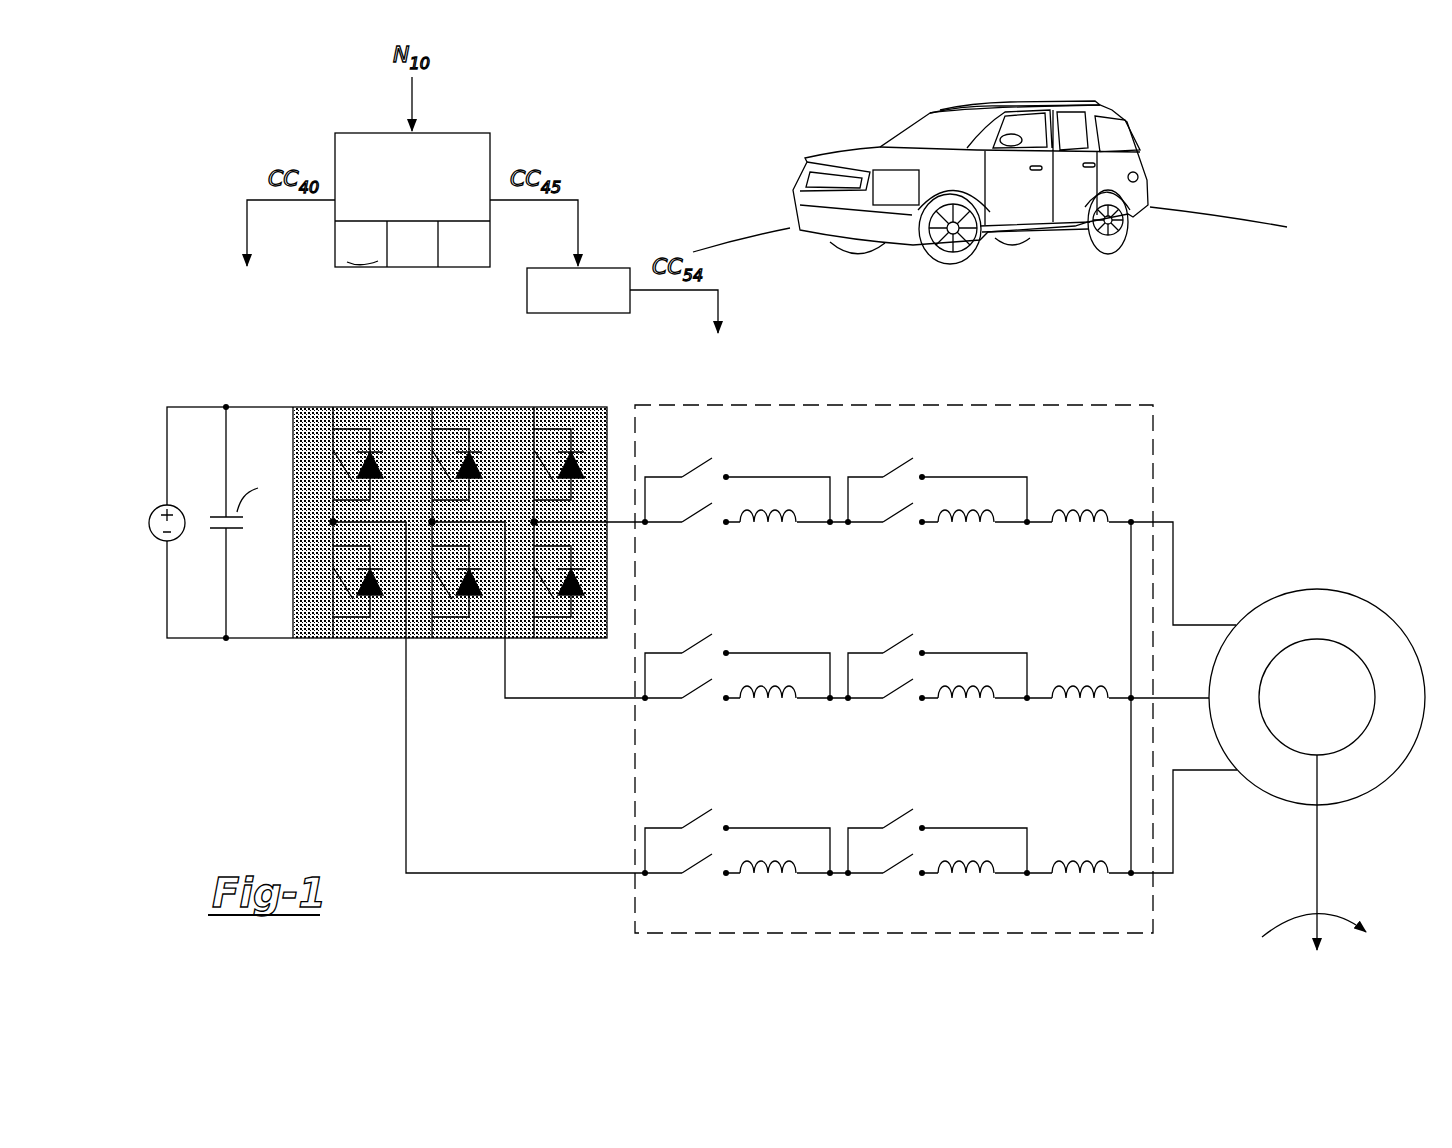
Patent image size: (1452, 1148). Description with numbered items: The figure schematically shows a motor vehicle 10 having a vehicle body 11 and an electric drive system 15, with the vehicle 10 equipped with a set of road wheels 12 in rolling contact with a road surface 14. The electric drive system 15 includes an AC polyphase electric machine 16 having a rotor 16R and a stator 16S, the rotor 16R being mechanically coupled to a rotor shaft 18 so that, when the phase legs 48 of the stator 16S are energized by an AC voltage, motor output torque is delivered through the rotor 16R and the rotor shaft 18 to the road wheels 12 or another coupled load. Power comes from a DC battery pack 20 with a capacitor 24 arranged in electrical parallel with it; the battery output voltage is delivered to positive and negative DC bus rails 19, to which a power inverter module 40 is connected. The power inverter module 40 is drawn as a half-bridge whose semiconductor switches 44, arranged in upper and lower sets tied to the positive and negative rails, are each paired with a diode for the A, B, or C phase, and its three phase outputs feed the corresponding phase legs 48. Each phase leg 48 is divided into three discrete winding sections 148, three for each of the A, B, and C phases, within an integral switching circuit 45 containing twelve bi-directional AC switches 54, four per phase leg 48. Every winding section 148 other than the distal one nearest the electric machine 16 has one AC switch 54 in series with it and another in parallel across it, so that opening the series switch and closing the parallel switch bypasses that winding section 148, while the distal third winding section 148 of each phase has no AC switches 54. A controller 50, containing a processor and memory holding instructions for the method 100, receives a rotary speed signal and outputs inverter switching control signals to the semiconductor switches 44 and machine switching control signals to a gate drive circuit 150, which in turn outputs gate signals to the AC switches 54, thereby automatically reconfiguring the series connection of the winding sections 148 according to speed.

The vehicle 10 is at (990, 176).
The vehicle body 11 is at (1125, 128).
The road wheels 12 is at (948, 266).
The road surface 14 is at (1186, 236).
The electric drive system 15 is at (1178, 388).
The electric machine 16 is at (1319, 687).
The stator 16S is at (1272, 772).
The rotor 16R is at (1349, 748).
The rotor shaft 18 is at (1318, 868).
The DC bus rails 19 is at (200, 407).
The DC battery pack 20 is at (183, 512).
The capacitor 24 is at (244, 546).
The power inverter module 40 is at (487, 407).
The semiconductor switches 44 is at (453, 522).
The switching circuit 45 is at (1157, 899).
The phase legs 48 is at (1193, 488).
The controller 50 is at (490, 147).
The AC switches 54 is at (722, 456).
The method 100 is at (365, 251).
The winding sections 148 is at (740, 537).
The gate drive circuit 150 is at (618, 268).